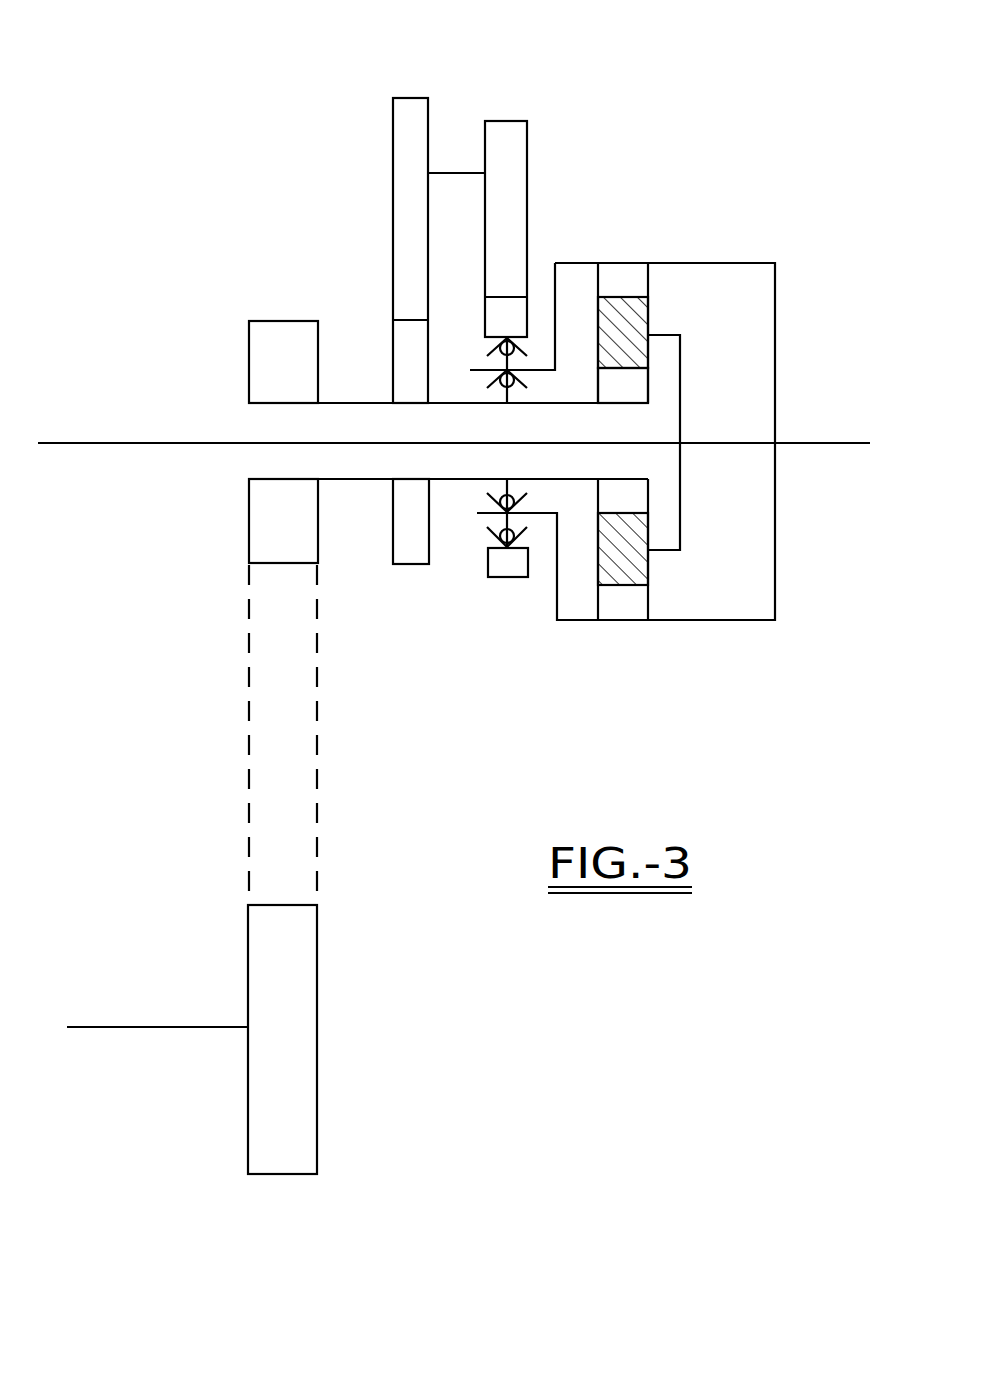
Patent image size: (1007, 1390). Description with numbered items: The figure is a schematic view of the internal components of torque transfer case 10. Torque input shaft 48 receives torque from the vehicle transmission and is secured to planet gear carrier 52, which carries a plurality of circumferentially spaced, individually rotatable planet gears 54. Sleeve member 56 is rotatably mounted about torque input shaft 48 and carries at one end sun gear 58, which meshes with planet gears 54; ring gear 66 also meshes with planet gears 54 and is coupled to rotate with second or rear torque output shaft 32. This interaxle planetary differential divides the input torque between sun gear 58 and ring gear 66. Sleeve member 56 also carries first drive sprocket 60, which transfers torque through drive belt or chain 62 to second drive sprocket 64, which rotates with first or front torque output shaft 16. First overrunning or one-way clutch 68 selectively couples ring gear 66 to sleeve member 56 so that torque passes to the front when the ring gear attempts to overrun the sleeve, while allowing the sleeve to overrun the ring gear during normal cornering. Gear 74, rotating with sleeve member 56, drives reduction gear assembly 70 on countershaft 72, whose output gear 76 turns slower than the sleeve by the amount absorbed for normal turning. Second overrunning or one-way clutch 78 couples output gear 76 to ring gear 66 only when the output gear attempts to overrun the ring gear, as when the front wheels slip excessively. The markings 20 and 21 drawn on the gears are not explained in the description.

The torque transfer case 10 is at (733, 212).
The first or front torque output shaft 16 is at (122, 1027).
The gear tooth count indication 20 is at (457, 309).
The gear tooth count indication 21 is at (463, 436).
The second or rear torque output shaft 32 is at (835, 442).
The torque input shaft 48 is at (120, 442).
The planet gear carrier 52 is at (683, 370).
The planet gears 54 is at (648, 320).
The sleeve member 56 is at (372, 479).
The sun gear 58 is at (627, 394).
The first drive sprocket 60 is at (249, 524).
The drive belt or chain 62 is at (246, 689).
The second drive sprocket 64 is at (318, 1027).
The ring gear 66 is at (620, 268).
The first overrunning or one-way clutch 68 is at (501, 396).
The reduction gear assembly 70 is at (470, 88).
The countershaft 72 is at (447, 174).
The gear 74 is at (393, 370).
The output gear 76 is at (486, 310).
The second overrunning or one-way clutch 78 is at (496, 350).